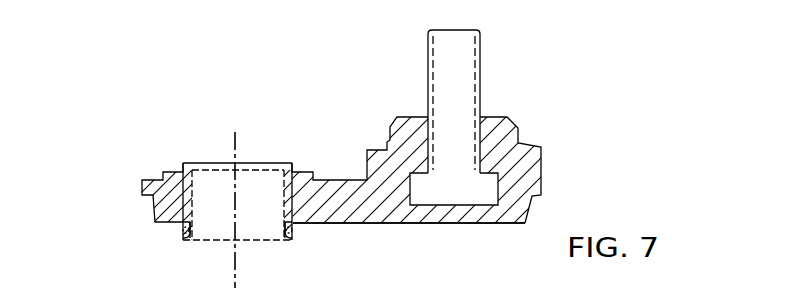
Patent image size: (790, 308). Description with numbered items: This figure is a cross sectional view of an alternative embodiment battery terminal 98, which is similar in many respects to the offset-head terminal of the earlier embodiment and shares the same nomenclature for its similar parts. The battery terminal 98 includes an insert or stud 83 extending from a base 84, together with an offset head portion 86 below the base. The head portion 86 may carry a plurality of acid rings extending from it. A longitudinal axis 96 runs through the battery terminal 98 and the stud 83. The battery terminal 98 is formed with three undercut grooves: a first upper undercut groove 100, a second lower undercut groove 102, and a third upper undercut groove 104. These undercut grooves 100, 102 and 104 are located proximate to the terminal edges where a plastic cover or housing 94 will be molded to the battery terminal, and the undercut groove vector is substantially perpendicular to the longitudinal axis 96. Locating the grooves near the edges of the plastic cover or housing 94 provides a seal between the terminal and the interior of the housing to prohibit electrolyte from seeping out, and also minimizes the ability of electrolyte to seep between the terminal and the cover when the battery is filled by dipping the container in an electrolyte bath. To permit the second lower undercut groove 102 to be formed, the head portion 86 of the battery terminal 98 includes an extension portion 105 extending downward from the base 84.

The insert or stud 83 is at (472, 73).
The base 84 is at (338, 190).
The offset head portion 86 is at (185, 258).
The plastic cover or housing 94 is at (409, 265).
The longitudinal axis 96 is at (236, 147).
The battery terminal 98 is at (610, 83).
The first upper undercut groove 100 is at (154, 180).
The second lower undercut groove 102 is at (182, 235).
The third upper undercut groove 104 is at (518, 142).
The extension portion 105 is at (289, 242).